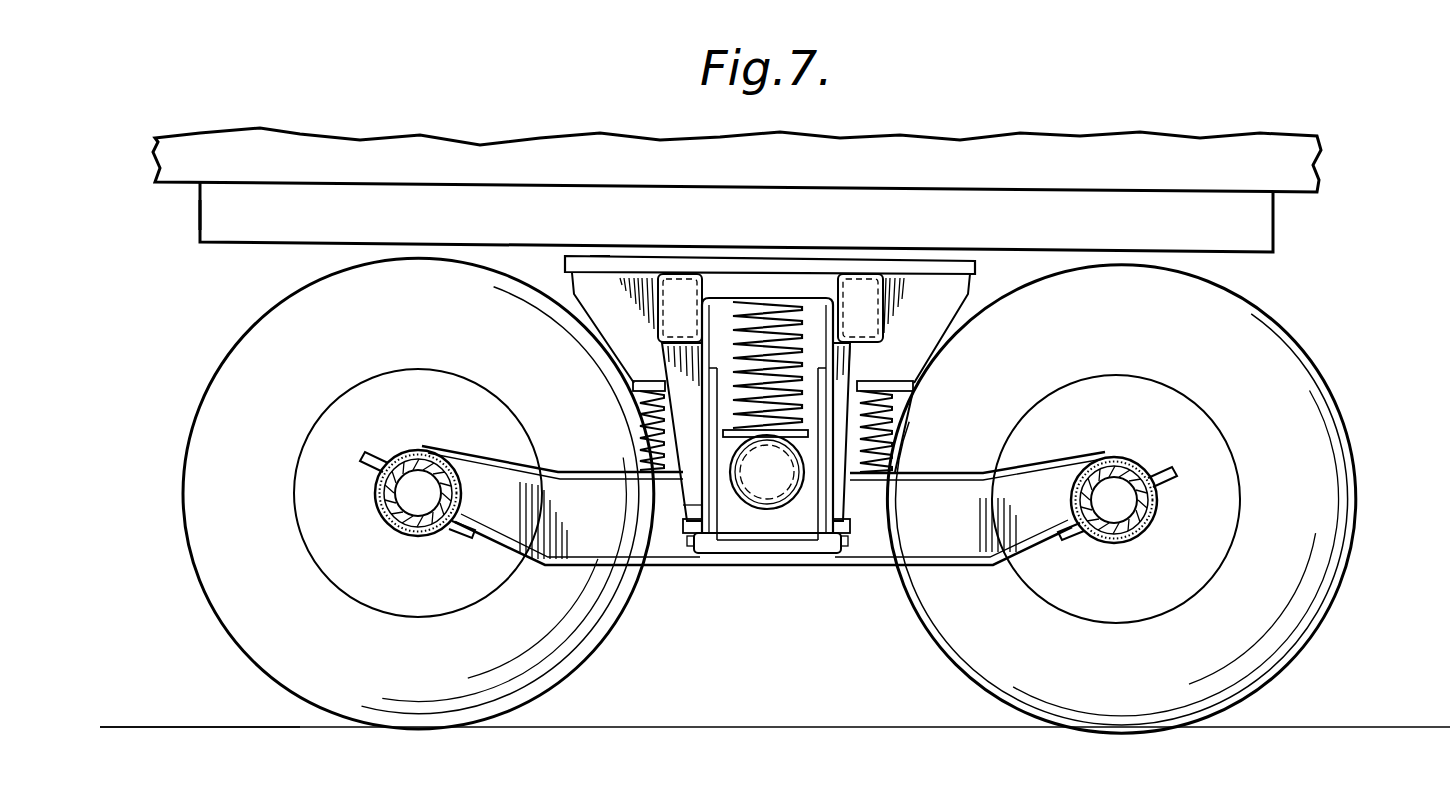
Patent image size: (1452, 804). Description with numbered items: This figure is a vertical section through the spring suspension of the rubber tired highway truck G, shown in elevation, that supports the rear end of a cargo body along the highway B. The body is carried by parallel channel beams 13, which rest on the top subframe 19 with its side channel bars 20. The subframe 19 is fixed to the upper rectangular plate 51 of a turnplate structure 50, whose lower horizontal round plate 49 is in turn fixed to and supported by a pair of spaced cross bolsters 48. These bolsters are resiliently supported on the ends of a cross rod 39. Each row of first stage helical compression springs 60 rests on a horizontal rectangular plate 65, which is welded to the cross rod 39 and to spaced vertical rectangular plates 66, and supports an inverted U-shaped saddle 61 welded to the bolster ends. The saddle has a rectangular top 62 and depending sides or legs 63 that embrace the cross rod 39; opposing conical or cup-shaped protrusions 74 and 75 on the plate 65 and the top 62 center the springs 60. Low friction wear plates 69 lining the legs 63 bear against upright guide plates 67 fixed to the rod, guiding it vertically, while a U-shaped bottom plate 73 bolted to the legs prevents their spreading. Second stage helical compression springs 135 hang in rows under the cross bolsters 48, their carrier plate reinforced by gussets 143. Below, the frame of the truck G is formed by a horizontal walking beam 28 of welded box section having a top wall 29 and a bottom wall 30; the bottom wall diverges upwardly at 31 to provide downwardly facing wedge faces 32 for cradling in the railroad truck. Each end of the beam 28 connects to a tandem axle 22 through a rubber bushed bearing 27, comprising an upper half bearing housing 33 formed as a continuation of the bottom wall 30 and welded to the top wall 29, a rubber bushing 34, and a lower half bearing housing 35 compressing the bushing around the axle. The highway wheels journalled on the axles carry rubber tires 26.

The channel beam 13 is at (505, 148).
The side channel bar 20 is at (410, 168).
The top subframe 19 is at (197, 212).
The turnplate structure 50 is at (556, 264).
The upper rectangular plate 51 is at (598, 254).
The lower horizontal round plate 49 is at (955, 266).
The gusset 143 is at (600, 292).
The cross bolster 48 is at (680, 275).
The rectangular top 62 is at (720, 300).
The first stage helical compression spring 60 is at (822, 300).
The U-shaped bottom plate 73 is at (808, 540).
The vertical rectangular plate 66 is at (790, 535).
The conical or cup-shaped protrusion 74 is at (760, 305).
The conical or cup-shaped protrusion 75 is at (738, 432).
The cross rod 39 is at (767, 510).
The inverted U-shaped saddle 61 is at (690, 380).
The side or leg 63 is at (688, 516).
The second stage helical compression spring 135 is at (647, 400).
The horizontal rectangular plate 65 is at (852, 445).
The upright guide plate 67 is at (715, 496).
The low friction wear plate 69 is at (700, 506).
The rubber tire 26 is at (322, 360).
The highway truck G is at (1324, 340).
The highway B is at (200, 717).
The upper half bearing housing 33 is at (400, 458).
The rubber bushed bearing 27 is at (393, 537).
The lower half bearing housing 35 is at (425, 538).
The tandem axle 22 is at (395, 493).
The rubber bushing 34 is at (415, 456).
The wedge face 32 is at (500, 556).
The walking beam 28 is at (572, 465).
The top wall 29 is at (960, 474).
The bottom wall 30 is at (958, 570).
The upwardly diverging portion 31 is at (522, 494).